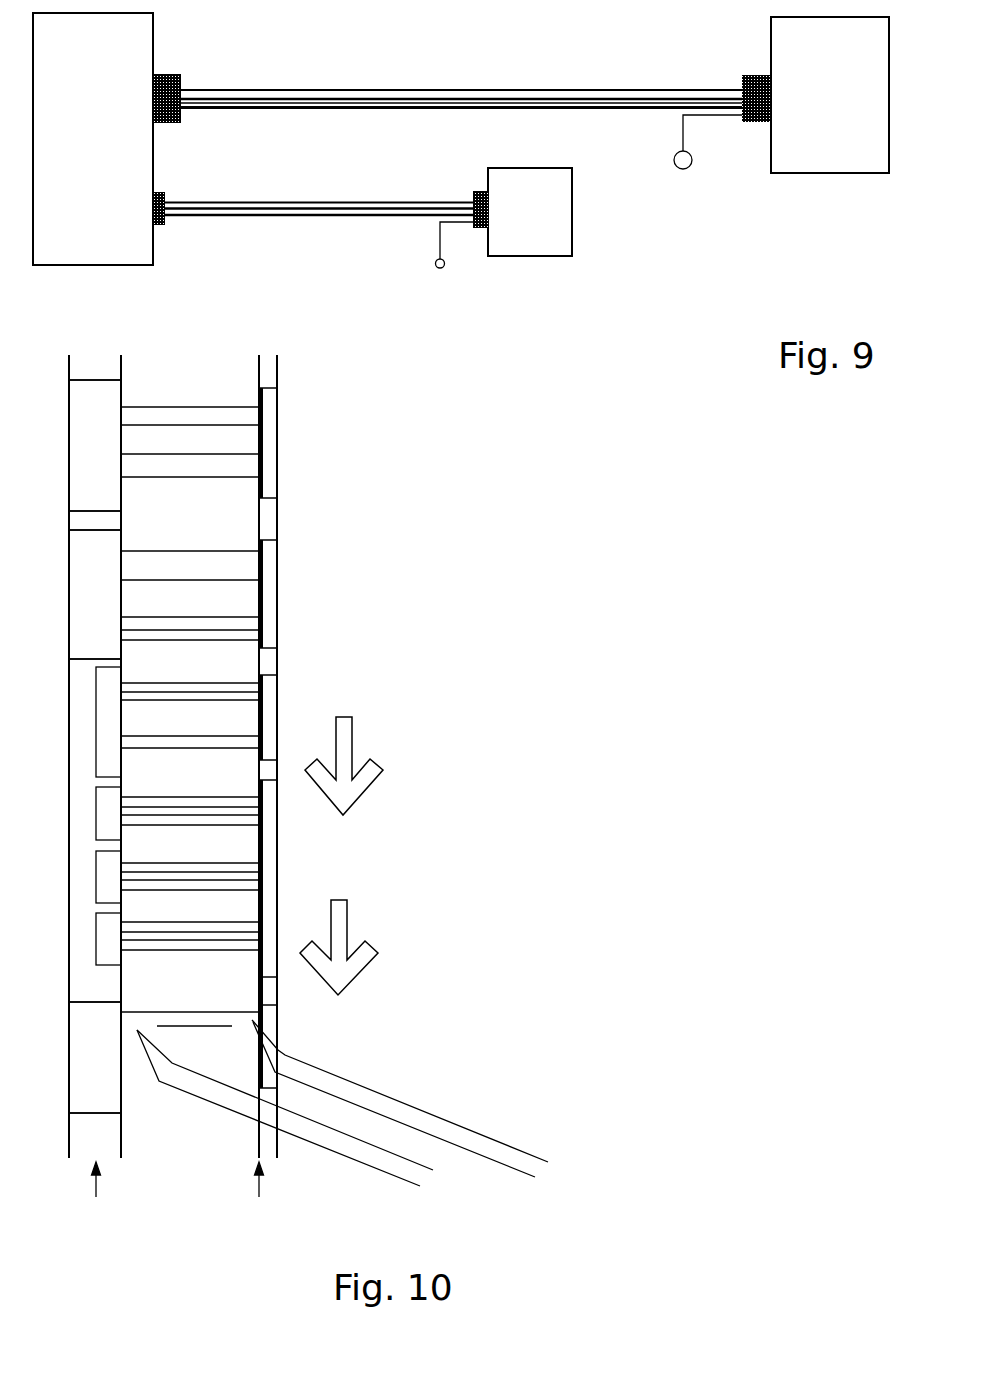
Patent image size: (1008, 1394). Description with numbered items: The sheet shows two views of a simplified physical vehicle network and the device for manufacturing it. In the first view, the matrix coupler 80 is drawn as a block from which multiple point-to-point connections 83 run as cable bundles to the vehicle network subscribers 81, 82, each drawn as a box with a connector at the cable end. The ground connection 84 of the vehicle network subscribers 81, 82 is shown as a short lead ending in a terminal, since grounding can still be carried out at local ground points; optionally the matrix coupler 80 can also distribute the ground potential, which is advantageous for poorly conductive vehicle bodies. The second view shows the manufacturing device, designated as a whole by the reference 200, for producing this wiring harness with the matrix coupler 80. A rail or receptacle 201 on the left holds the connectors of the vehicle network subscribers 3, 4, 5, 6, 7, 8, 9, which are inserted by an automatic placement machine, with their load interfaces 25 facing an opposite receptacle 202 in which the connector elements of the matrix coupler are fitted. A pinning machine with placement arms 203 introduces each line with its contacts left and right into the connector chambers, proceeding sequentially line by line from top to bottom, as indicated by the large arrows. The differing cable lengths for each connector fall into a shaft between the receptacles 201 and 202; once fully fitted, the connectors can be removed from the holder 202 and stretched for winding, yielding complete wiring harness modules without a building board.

In FIG. 9, the matrix coupler 80 is at (93, 139).
In FIG. 9, the vehicle network subscriber 81 is at (830, 95).
In FIG. 9, the vehicle network subscriber 82 is at (530, 212).
In FIG. 9, the point-to-point connection 83 is at (362, 84).
In FIG. 9, the ground connection 84 is at (697, 183).
In FIG. 10, the processing line 200 is at (302, 371).
In FIG. 10, the load interface 25 is at (281, 756).
In FIG. 10, the vehicle network subscriber 3 is at (95, 445).
In FIG. 10, the vehicle network subscriber 4 is at (95, 594).
In FIG. 10, the vehicle network subscriber 5 is at (108, 722).
In FIG. 10, the vehicle network subscriber 6 is at (108, 813).
In FIG. 10, the vehicle network subscriber 7 is at (108, 877).
In FIG. 10, the vehicle network subscriber 8 is at (108, 939).
In FIG. 10, the vehicle network subscriber 9 is at (95, 1057).
In FIG. 10, the rail or receptacle 201 is at (96, 1197).
In FIG. 10, the opposite receptacle 202 is at (268, 1197).
In FIG. 10, the placement arm 203 is at (310, 1106).